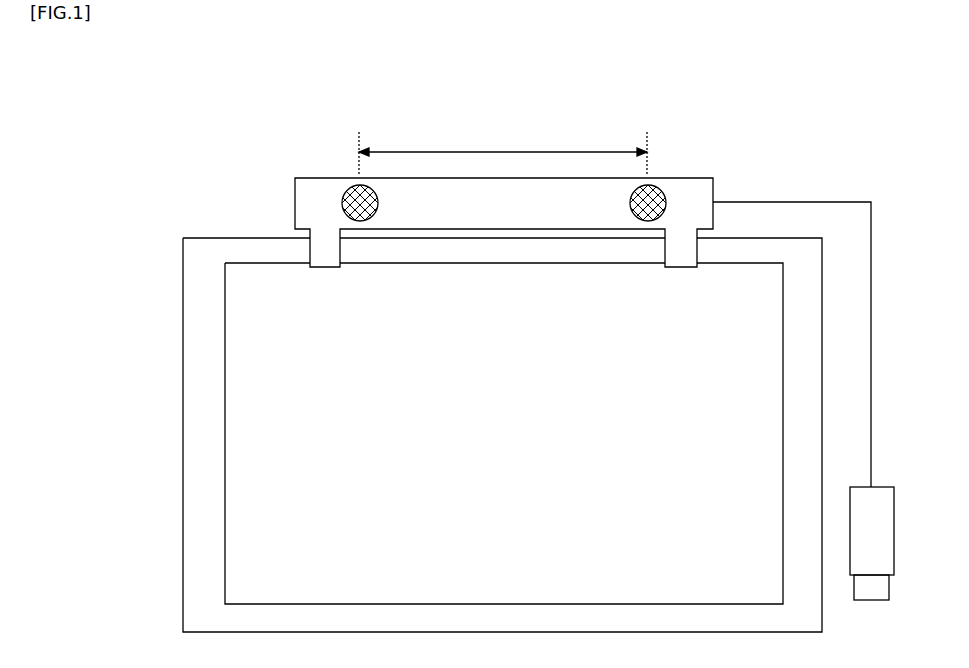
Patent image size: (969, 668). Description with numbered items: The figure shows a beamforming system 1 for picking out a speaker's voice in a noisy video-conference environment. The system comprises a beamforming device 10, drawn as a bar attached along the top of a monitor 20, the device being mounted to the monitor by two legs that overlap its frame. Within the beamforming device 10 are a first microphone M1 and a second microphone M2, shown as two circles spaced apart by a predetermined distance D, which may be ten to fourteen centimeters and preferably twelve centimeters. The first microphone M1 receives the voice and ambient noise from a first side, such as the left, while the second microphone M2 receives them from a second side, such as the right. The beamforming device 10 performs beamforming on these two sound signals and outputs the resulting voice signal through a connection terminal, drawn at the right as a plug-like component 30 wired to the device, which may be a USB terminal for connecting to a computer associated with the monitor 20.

The beamforming system 1 is at (542, 85).
The beamforming device 10 is at (295, 202).
The monitor 20 is at (183, 433).
The first microphone M1 is at (343, 183).
The second microphone M2 is at (662, 186).
The predetermined distance D is at (503, 147).
The controller 30 is at (894, 530).